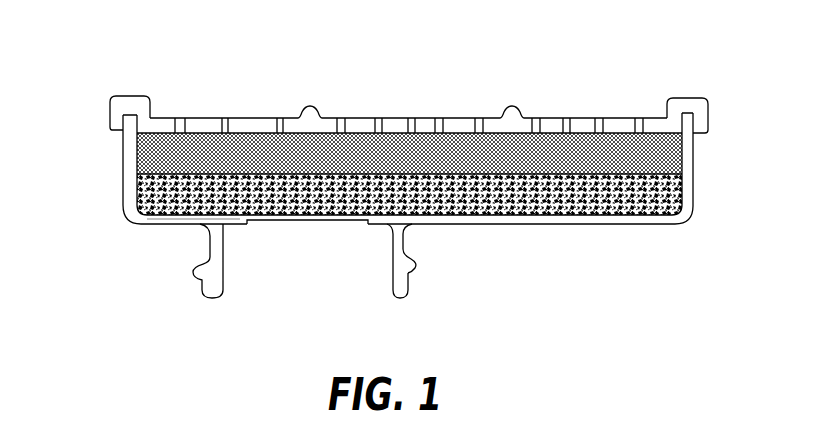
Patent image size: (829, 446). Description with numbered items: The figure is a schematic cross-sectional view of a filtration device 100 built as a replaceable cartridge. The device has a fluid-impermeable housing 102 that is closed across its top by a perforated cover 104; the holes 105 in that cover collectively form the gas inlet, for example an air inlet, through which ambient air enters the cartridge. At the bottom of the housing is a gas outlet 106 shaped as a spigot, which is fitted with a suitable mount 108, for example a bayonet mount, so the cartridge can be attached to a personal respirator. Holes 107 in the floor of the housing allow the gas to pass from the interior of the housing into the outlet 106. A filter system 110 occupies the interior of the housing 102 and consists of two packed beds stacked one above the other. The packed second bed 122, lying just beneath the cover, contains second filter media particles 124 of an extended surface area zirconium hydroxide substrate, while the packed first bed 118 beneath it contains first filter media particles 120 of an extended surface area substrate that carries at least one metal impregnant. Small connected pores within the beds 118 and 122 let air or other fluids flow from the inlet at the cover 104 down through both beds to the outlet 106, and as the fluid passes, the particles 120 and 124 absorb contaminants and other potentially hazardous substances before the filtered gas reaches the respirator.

The filtration device 100 is at (617, 78).
The housing 102 is at (653, 222).
The perforated cover 104 is at (162, 123).
The holes 105 is at (479, 119).
The gas outlet 106 is at (393, 268).
The holes 107 is at (296, 221).
The mount 108 is at (420, 264).
The filter system 110 is at (110, 132).
The first bed 118 is at (685, 192).
The first filter media particles 120 is at (192, 216).
The second bed 122 is at (683, 143).
The second filter media particles 124 is at (263, 152).